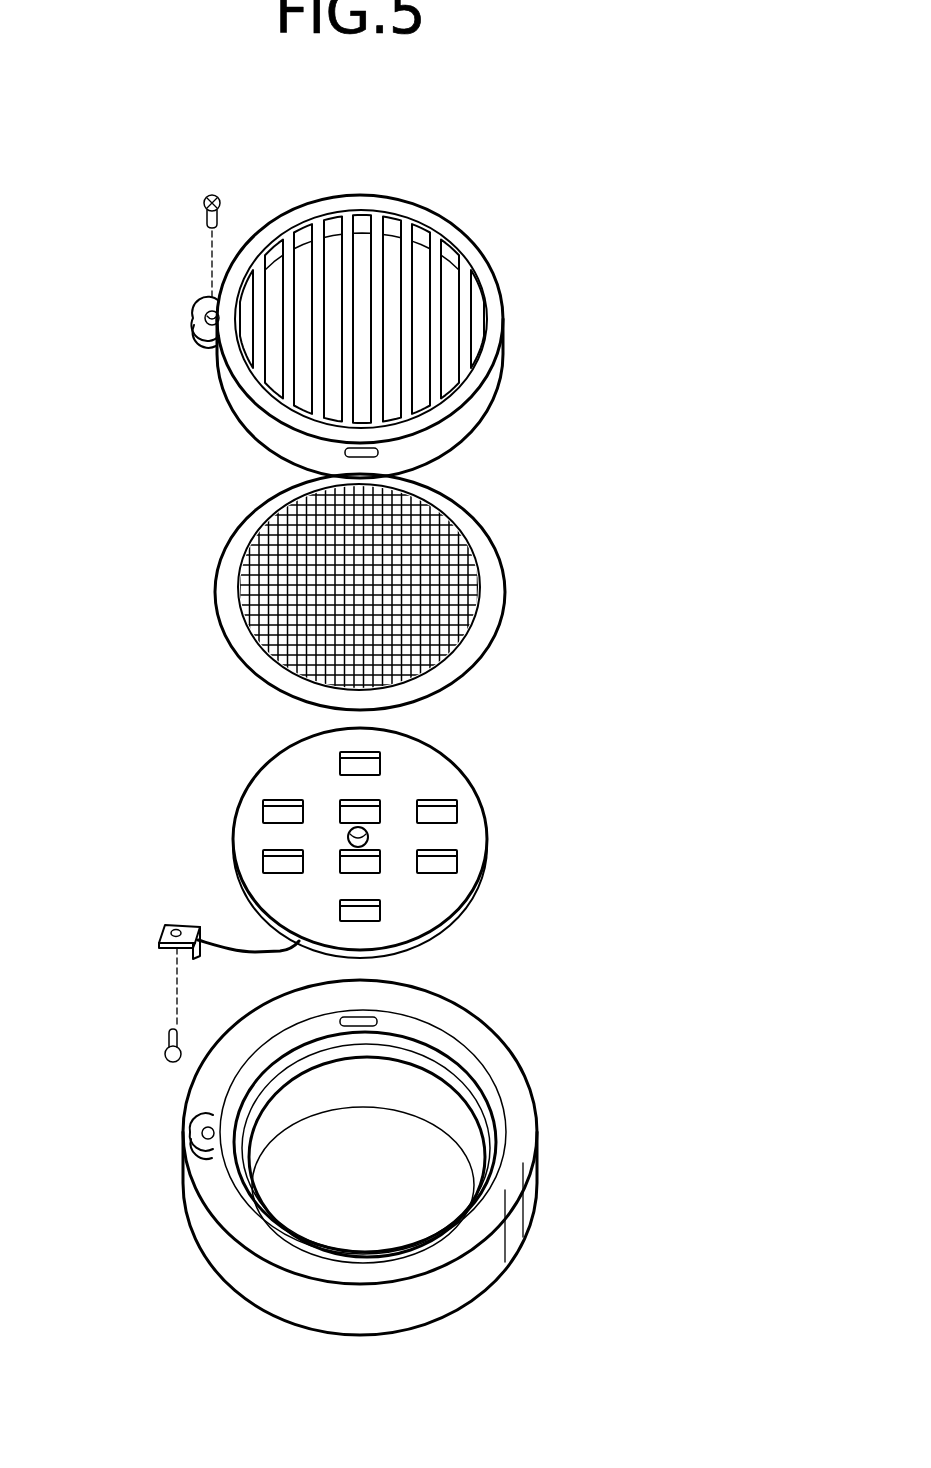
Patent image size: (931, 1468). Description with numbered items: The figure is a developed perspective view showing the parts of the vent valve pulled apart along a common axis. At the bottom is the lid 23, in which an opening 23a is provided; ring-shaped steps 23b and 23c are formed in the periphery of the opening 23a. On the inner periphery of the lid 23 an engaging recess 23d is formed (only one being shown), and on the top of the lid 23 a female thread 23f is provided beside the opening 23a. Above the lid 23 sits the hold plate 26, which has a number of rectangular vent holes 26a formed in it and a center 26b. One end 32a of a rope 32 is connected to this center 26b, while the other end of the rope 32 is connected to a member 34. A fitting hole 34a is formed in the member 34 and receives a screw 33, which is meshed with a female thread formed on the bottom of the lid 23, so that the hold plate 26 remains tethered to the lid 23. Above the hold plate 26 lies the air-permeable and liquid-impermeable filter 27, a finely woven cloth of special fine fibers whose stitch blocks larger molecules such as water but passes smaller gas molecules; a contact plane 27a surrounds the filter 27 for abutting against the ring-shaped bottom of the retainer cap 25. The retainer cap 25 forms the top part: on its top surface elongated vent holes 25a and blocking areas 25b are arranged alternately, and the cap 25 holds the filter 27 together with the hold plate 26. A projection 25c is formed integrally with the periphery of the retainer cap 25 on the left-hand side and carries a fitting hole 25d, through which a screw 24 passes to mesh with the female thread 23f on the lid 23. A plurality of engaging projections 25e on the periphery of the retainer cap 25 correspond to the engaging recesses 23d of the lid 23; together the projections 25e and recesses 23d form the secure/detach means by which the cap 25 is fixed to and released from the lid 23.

The lid 23 is at (523, 1120).
The opening 23a is at (427, 1200).
The ring-shaped step 23b is at (463, 1080).
The ring-shaped step 23c is at (297, 1083).
The engaging recess 23d is at (350, 1017).
The female thread 23f is at (183, 1130).
The screw 24 is at (203, 213).
The retainer cap 25 is at (497, 300).
The vent hole 25a is at (453, 247).
The blocking area 25b is at (433, 247).
The projection 25c is at (190, 328).
The fitting hole 25d is at (205, 312).
The engaging projection 25e is at (380, 445).
The hold plate 26 is at (417, 940).
The rectangular vent hole 26a is at (447, 860).
The center 26b is at (367, 832).
The air-permeable and liquid-impermeable filter 27 is at (460, 573).
The contact plane 27a is at (473, 653).
The rope 32 is at (238, 950).
The one end of rope 32a is at (350, 832).
The screw 33 is at (160, 1054).
The member 34 is at (163, 933).
The fitting hole 34a is at (177, 928).